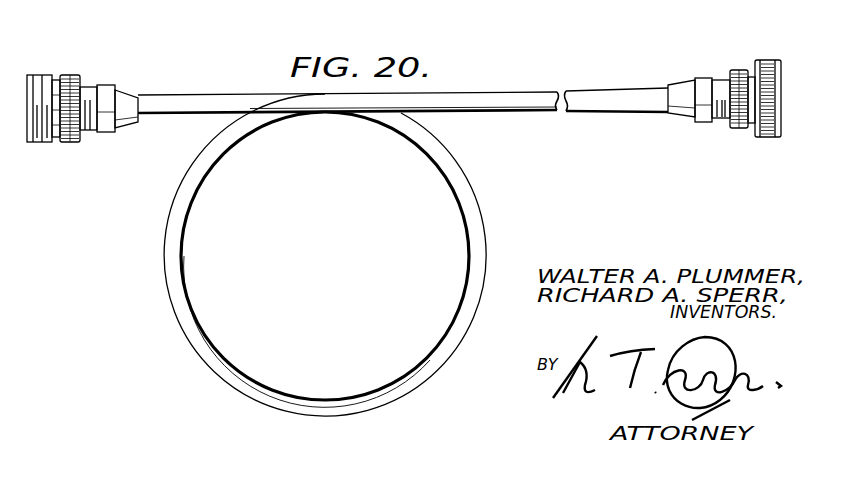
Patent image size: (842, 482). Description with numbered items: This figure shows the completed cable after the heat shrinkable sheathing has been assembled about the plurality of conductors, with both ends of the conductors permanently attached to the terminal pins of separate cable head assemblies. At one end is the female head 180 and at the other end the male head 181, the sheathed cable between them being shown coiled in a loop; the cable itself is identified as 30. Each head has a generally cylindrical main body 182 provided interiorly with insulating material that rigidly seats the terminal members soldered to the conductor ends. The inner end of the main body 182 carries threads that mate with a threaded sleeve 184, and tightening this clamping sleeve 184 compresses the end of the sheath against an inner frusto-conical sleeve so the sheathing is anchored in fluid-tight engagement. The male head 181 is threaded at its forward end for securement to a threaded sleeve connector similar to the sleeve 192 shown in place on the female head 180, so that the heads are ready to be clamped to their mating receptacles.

The flexible cable 30 is at (494, 99).
The female head 180 is at (722, 66).
The male head 181 is at (59, 68).
The main body 182 is at (82, 87).
The threaded sleeve 184 is at (105, 133).
The threaded sleeve connector 192 is at (766, 136).